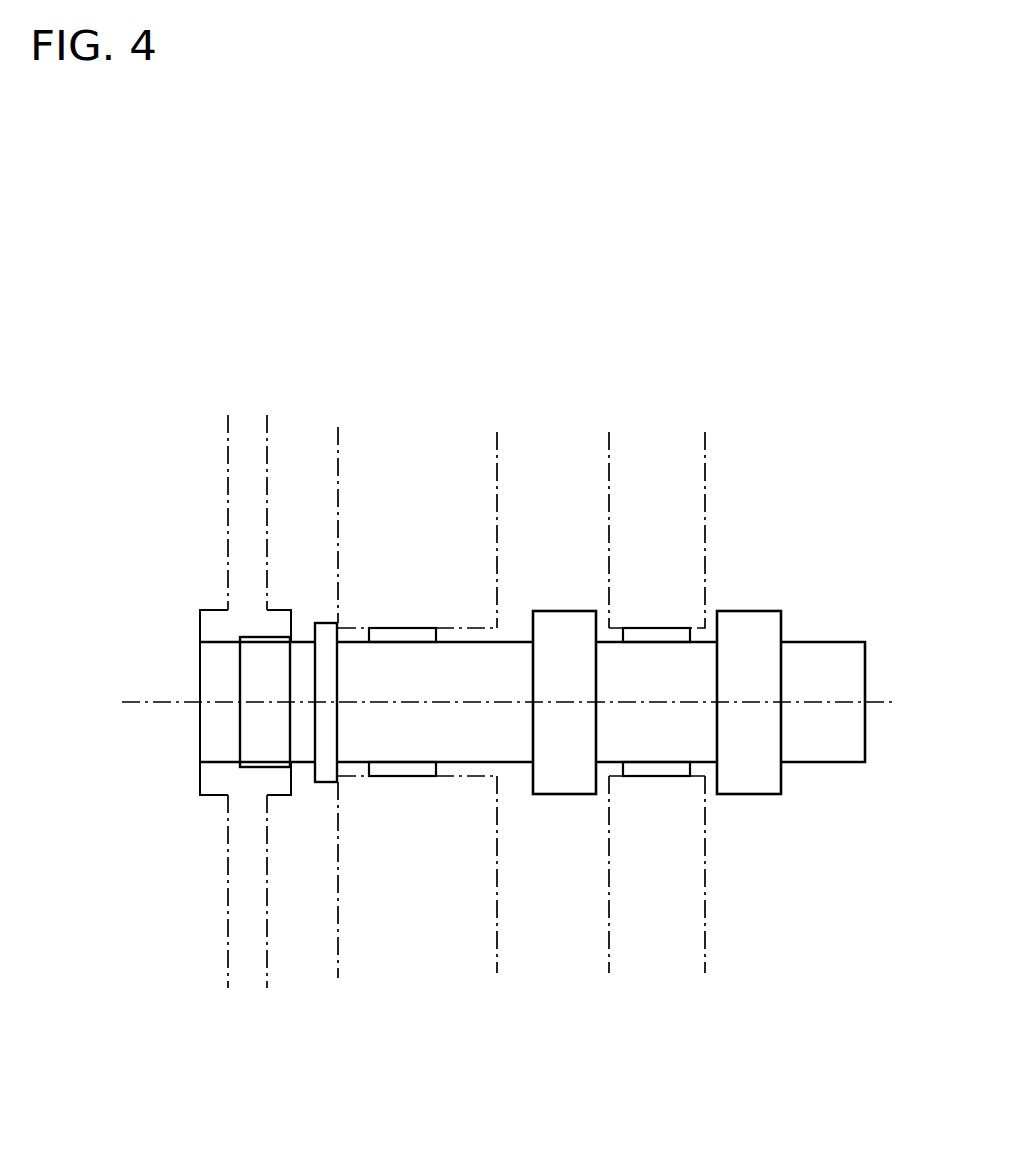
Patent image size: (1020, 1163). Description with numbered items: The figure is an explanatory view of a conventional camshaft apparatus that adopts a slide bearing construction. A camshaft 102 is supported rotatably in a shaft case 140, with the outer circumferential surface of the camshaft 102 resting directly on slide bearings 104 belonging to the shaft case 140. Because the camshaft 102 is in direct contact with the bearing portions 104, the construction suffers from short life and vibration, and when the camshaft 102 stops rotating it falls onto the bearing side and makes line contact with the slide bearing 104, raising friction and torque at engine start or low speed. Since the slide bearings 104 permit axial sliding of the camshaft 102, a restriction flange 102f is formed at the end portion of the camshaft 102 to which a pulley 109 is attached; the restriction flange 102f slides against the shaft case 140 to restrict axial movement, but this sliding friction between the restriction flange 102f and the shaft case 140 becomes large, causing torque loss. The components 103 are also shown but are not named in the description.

The camshaft 102 is at (822, 653).
The restriction flange 102f is at (326, 780).
The rotor core 103 is at (563, 622).
The slide bearing 104 is at (402, 634).
The pulley 109 is at (228, 510).
The shaft case 140 is at (610, 528).